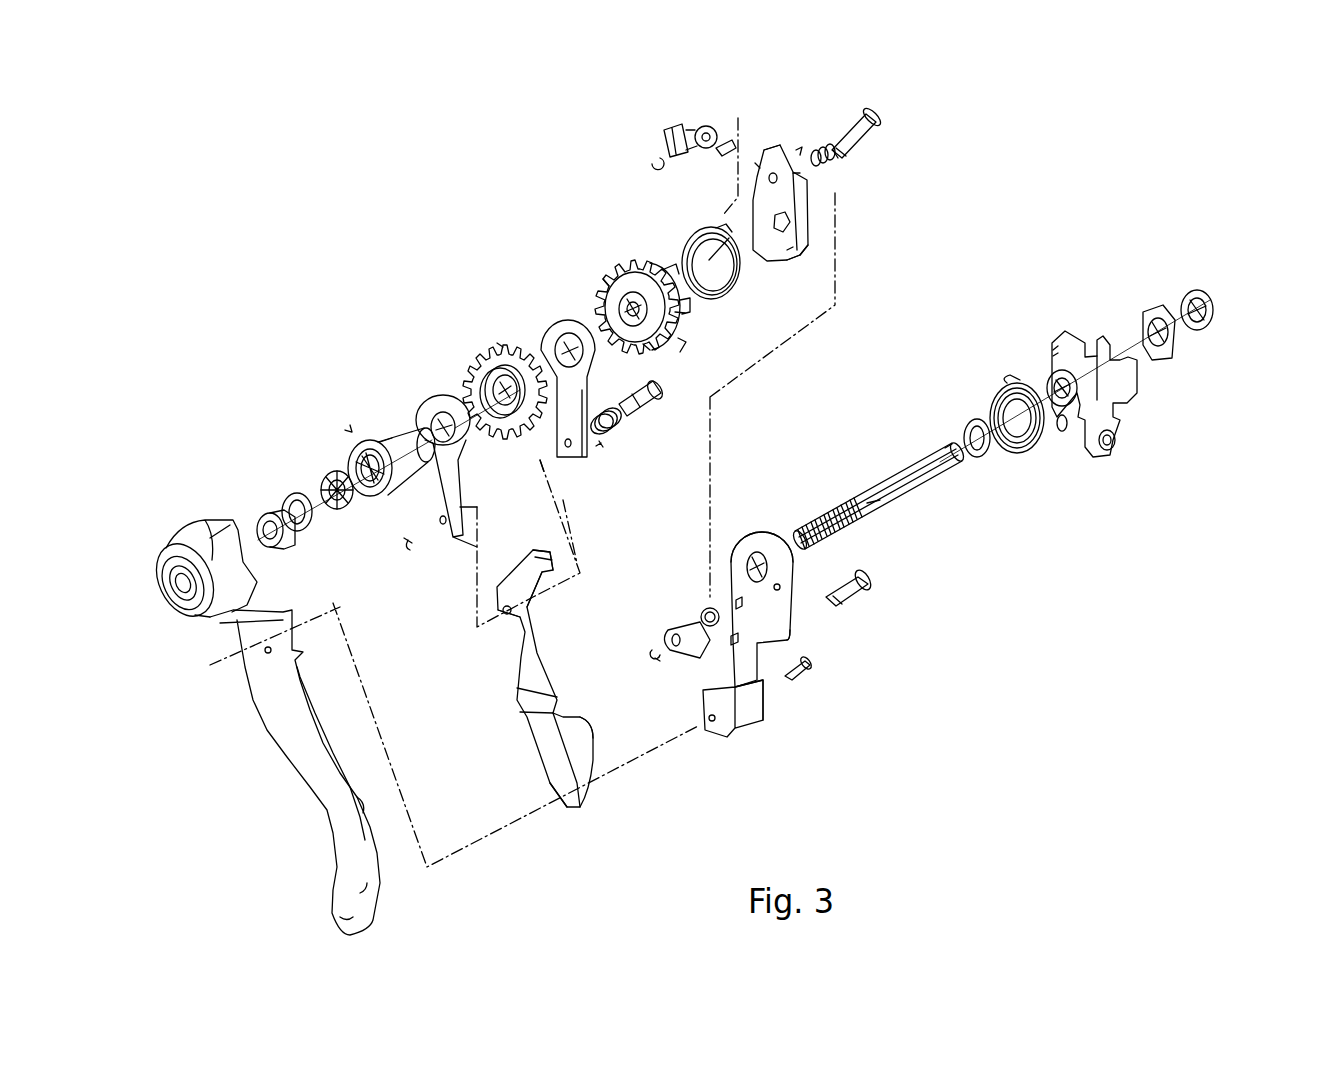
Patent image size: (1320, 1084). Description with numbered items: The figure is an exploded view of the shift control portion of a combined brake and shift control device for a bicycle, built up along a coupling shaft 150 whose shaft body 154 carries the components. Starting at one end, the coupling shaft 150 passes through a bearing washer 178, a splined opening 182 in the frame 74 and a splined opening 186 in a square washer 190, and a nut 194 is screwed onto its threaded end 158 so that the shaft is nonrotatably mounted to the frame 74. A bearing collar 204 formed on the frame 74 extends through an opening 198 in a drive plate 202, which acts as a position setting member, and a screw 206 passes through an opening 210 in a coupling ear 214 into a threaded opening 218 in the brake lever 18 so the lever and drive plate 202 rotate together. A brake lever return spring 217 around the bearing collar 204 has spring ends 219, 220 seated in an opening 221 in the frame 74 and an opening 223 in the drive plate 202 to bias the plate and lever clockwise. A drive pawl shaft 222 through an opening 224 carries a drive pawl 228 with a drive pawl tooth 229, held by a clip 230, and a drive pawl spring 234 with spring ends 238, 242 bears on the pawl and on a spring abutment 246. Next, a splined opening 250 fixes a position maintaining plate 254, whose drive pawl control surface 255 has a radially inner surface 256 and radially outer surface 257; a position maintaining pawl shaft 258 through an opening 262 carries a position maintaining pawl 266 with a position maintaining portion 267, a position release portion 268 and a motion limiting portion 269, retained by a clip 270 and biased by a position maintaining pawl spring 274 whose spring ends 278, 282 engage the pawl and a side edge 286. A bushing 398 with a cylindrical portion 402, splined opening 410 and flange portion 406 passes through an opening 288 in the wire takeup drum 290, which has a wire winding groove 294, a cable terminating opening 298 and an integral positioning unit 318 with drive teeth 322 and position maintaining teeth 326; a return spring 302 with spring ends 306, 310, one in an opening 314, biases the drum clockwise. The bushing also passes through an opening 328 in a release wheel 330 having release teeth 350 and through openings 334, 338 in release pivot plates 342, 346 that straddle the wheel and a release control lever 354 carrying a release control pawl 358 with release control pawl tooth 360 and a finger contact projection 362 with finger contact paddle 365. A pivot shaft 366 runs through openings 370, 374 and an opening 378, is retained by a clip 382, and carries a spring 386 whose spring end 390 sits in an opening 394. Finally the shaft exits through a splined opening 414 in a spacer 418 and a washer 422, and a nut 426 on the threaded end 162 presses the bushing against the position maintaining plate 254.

The brake lever 18 is at (350, 848).
The frame 74 is at (1133, 407).
The coupling shaft 150 is at (903, 498).
The shaft body 154 is at (883, 480).
The threaded end 158 is at (945, 450).
The threaded end 162 is at (825, 512).
The bearing washer 178 is at (970, 423).
The splined opening 182 is at (1047, 380).
The splined opening 186 is at (1143, 327).
The square washer 190 is at (1173, 352).
The nut 194 is at (1207, 297).
The opening 198 is at (753, 535).
The drive plate 202 is at (792, 632).
The bearing collar 204 is at (1113, 415).
The screw 206 is at (793, 680).
The opening 210 is at (713, 727).
The coupling ear 214 is at (737, 707).
The brake lever return spring 217 is at (1023, 457).
The threaded opening 218 is at (265, 651).
The spring end 219 is at (1020, 387).
The spring end 220 is at (1037, 443).
The opening 221 is at (1050, 357).
The drive pawl shaft 222 is at (847, 600).
The opening 223 is at (777, 587).
The opening 224 is at (745, 572).
The drive pawl 228 is at (668, 640).
The drive pawl tooth 229 is at (658, 665).
The clip 230 is at (652, 660).
The drive pawl spring 234 is at (705, 613).
The spring end 238 is at (700, 623).
The spring end 242 is at (656, 655).
The spring abutment 246 is at (792, 640).
The splined opening 250 is at (808, 238).
The position maintaining plate 254 is at (810, 207).
The drive pawl control surface 255 is at (808, 250).
The radially inner surface 256 is at (790, 255).
The radially outer surface 257 is at (785, 248).
The position maintaining pawl shaft 258 is at (874, 114).
The opening 262 is at (766, 175).
The position maintaining pawl 266 is at (699, 127).
The position maintaining portion 267 is at (670, 125).
The position release portion 268 is at (663, 140).
The motion limiting portion 269 is at (716, 153).
The clip 270 is at (652, 167).
The position maintaining pawl spring 274 is at (822, 150).
The spring end 278 is at (798, 150).
The spring end 282 is at (833, 153).
The side edge 286 is at (800, 173).
The opening 288 is at (626, 306).
The wire takeup drum 290 is at (637, 257).
The wire winding groove 294 is at (680, 315).
The cable terminating opening 298 is at (665, 273).
The return spring 302 is at (743, 283).
The spring end 306 is at (720, 230).
The spring end 310 is at (713, 290).
The opening 314 is at (756, 165).
The positioning unit 318 is at (618, 308).
The drive teeth 322 is at (647, 347).
The position maintaining teeth 326 is at (613, 272).
The opening 328 is at (500, 393).
The release wheel 330 is at (493, 367).
The opening 334 is at (560, 345).
The opening 338 is at (459, 432).
The release pivot plate 342 is at (553, 320).
The release pivot plate 346 is at (455, 478).
The release teeth 350 is at (497, 343).
The release control lever 354 is at (553, 680).
The release control pawl 358 is at (537, 585).
The release control pawl tooth 360 is at (537, 550).
The finger contact projection 362 is at (547, 770).
The finger contact paddle 365 is at (587, 740).
The pivot shaft 366 is at (650, 405).
The opening 370 is at (560, 492).
The opening 374 is at (440, 519).
The opening 378 is at (503, 607).
The clip 382 is at (410, 543).
The spring 386 is at (613, 424).
The spring end 390 is at (600, 445).
The opening 394 is at (507, 637).
The bushing 398 is at (352, 430).
The cylindrical portion 402 is at (393, 437).
The flange portion 406 is at (364, 437).
The splined opening 410 is at (353, 453).
The splined opening 414 is at (328, 491).
The spacer 418 is at (323, 473).
The washer 422 is at (273, 497).
The nut 426 is at (250, 513).